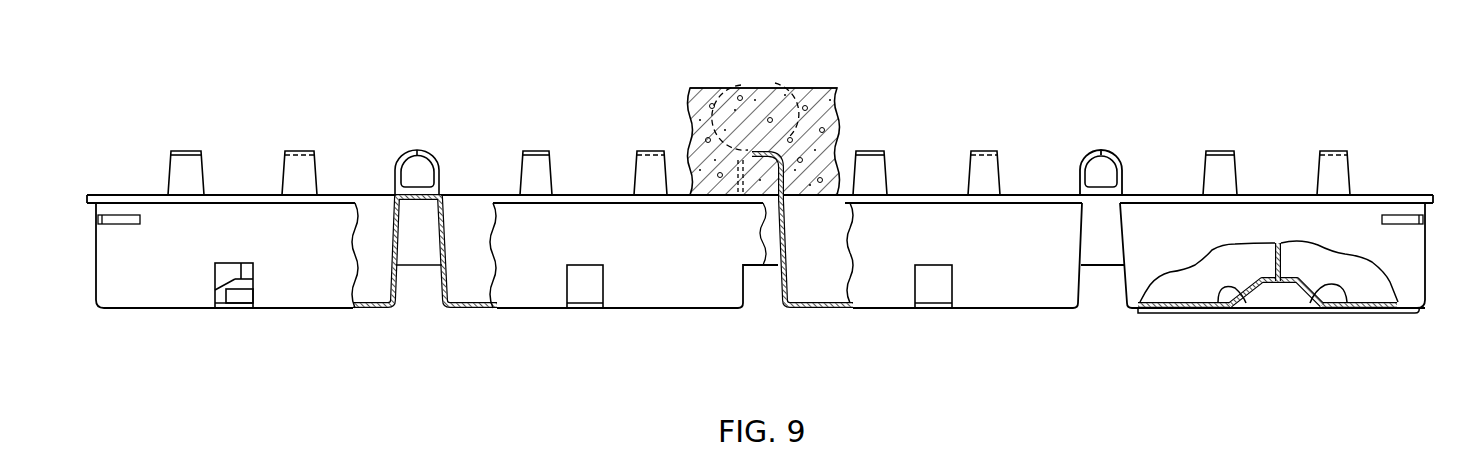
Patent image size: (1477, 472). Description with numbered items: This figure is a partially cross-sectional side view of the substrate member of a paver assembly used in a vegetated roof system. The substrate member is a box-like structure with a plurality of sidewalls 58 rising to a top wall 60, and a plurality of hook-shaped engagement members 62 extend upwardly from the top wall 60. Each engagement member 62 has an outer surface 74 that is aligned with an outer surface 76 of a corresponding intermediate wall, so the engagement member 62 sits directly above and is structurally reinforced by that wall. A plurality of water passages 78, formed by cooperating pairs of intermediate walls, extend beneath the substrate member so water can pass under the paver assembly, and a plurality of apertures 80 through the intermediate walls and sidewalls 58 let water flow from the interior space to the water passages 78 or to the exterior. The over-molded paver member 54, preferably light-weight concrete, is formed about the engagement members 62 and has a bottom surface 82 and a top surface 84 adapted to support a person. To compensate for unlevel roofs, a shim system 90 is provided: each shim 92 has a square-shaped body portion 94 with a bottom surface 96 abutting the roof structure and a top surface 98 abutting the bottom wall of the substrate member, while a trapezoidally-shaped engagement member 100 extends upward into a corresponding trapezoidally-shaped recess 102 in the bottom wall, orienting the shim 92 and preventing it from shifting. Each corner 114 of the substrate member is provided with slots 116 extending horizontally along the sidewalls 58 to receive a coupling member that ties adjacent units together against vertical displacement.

The paver member 54 is at (706, 85).
The sidewalls 58 is at (1362, 232).
The top wall 60 is at (1127, 192).
The engagement members 62 is at (402, 152).
The outer surface 74 is at (405, 186).
The outer surface 76 is at (398, 250).
The water passages 78 is at (768, 298).
The apertures 80 is at (932, 285).
The bottom surface 82 is at (767, 230).
The top surface 84 is at (805, 88).
The shim system 90 is at (1260, 330).
The shim 92 is at (1273, 322).
The body portion 94 is at (1422, 313).
The bottom surface 96 is at (1192, 315).
The top surface 98 is at (1360, 303).
The engagement member 100 is at (1348, 302).
The recess 102 is at (1218, 302).
The corner 114 is at (96, 277).
The slots 116 is at (117, 216).